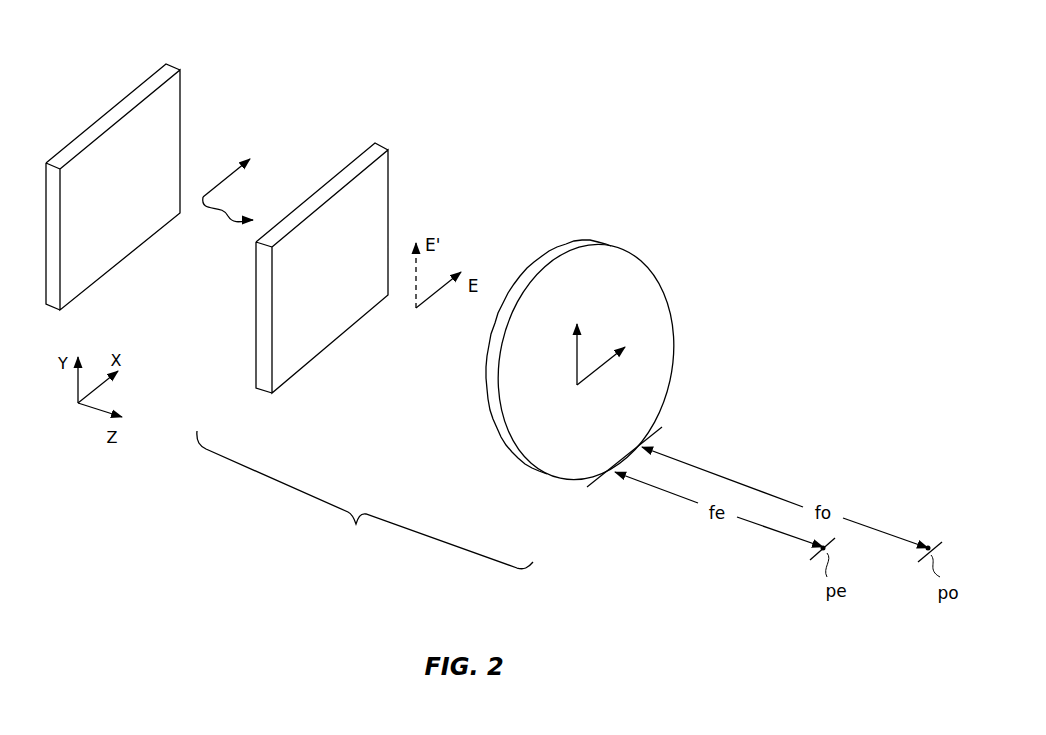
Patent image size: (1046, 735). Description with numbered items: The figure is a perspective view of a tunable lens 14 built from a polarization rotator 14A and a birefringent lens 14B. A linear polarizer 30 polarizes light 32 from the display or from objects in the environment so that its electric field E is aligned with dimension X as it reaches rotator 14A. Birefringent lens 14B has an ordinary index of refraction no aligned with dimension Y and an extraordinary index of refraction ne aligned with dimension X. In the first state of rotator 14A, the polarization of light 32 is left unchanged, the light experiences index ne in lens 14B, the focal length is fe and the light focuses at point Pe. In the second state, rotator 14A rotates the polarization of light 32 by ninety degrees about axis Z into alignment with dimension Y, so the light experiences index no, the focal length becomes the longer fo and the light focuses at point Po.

The linear polarizer 30 is at (172, 66).
The light 32 is at (228, 218).
The lens 14 is at (365, 500).
The polarization rotator 14A is at (386, 148).
The birefringent lens 14B is at (650, 261).